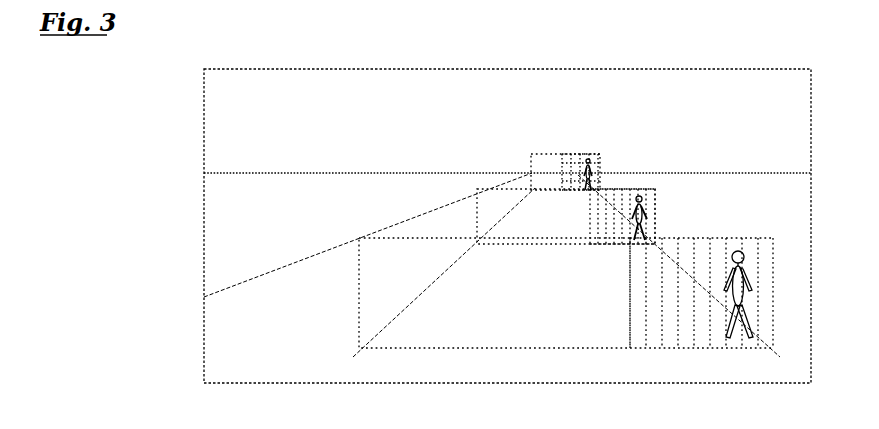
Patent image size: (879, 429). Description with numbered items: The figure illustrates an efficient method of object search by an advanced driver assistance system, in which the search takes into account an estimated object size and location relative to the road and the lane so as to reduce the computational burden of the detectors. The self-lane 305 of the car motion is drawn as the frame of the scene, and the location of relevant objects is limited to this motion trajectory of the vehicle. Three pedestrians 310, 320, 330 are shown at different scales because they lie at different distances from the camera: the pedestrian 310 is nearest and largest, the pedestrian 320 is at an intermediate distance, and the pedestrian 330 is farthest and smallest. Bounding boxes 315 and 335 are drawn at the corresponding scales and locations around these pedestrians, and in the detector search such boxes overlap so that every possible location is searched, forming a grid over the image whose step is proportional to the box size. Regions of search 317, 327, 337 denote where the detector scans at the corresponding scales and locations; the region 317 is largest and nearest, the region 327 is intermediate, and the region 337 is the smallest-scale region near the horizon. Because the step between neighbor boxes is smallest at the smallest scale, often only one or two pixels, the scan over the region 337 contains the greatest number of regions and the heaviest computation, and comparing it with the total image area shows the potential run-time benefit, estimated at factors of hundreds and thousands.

The self-lane 305 is at (507, 226).
The pedestrian 310 is at (746, 288).
The bounding box 315 is at (633, 188).
The region of search 317 is at (357, 268).
The pedestrian 320 is at (643, 198).
The region of search 327 is at (475, 211).
The pedestrian 330 is at (602, 172).
The bounding box 335 is at (590, 153).
The region of search 337 is at (524, 157).